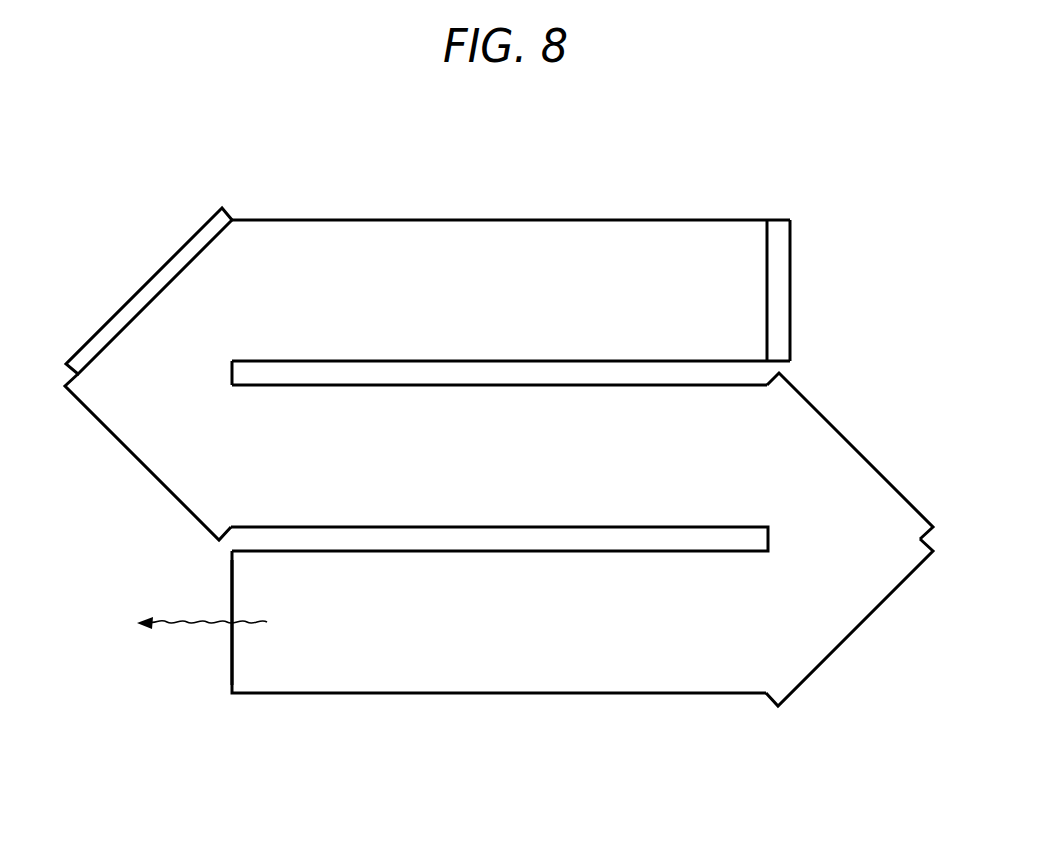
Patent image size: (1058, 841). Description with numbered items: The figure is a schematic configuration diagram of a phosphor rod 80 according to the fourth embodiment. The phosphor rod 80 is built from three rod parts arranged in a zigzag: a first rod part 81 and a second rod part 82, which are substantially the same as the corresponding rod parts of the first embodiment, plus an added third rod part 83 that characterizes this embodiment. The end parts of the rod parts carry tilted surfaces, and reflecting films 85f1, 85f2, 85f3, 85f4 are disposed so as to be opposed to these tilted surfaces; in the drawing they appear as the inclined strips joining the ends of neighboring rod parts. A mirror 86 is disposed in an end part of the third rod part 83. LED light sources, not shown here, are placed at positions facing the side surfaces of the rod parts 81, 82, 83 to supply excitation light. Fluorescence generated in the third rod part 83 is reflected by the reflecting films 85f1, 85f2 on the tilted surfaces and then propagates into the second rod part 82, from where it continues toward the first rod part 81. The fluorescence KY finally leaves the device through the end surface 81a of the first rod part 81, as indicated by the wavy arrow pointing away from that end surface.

The phosphor rod 80 is at (855, 168).
The first rod part 81 is at (308, 682).
The end surface 81a is at (231, 663).
The second rod part 82 is at (402, 516).
The third rod part 83 is at (308, 232).
The reflecting film 85f1 is at (138, 303).
The reflecting film 85f2 is at (138, 445).
The reflecting film 85f3 is at (862, 468).
The reflecting film 85f4 is at (862, 610).
The mirror 86 is at (783, 265).
The fluorescence KY is at (188, 625).